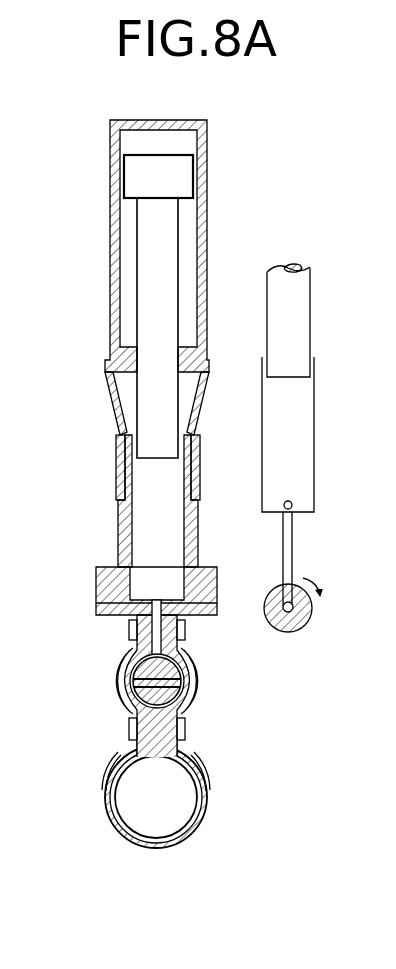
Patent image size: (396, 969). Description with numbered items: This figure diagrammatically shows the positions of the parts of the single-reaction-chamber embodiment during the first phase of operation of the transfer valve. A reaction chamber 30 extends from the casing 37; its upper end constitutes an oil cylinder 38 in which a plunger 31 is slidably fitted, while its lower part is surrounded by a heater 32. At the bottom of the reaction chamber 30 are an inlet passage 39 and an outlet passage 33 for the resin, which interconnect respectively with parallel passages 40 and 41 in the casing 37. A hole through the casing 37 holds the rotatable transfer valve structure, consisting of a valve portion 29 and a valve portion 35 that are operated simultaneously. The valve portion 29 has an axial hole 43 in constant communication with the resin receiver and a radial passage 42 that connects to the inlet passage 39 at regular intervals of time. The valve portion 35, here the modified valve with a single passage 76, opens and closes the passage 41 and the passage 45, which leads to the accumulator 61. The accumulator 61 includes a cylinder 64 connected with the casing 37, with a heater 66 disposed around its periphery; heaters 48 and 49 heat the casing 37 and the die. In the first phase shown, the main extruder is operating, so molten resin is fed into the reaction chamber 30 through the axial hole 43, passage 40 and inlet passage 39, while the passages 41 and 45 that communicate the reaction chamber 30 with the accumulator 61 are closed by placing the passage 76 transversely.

The oil cylinder 38 is at (207, 240).
The plunger 31 is at (140, 271).
The heater 32 is at (118, 473).
The reaction chamber 30 is at (120, 539).
The outlet passage 33 is at (110, 590).
The valve portion 35 is at (182, 690).
The passage 76 is at (117, 673).
The heater 48 is at (132, 630).
The parallel passage 41 is at (183, 630).
The casing 37 is at (133, 722).
The passage 45 is at (183, 735).
The accumulator 61 is at (210, 788).
The cylinder 64 is at (207, 800).
The heater 66 is at (104, 800).
The heater 49 is at (118, 752).
The inlet passage 39 is at (293, 505).
The parallel passage 40 is at (293, 545).
The valve portion 29 is at (300, 625).
The radial passage 42 is at (284, 585).
The axial hole 43 is at (313, 605).